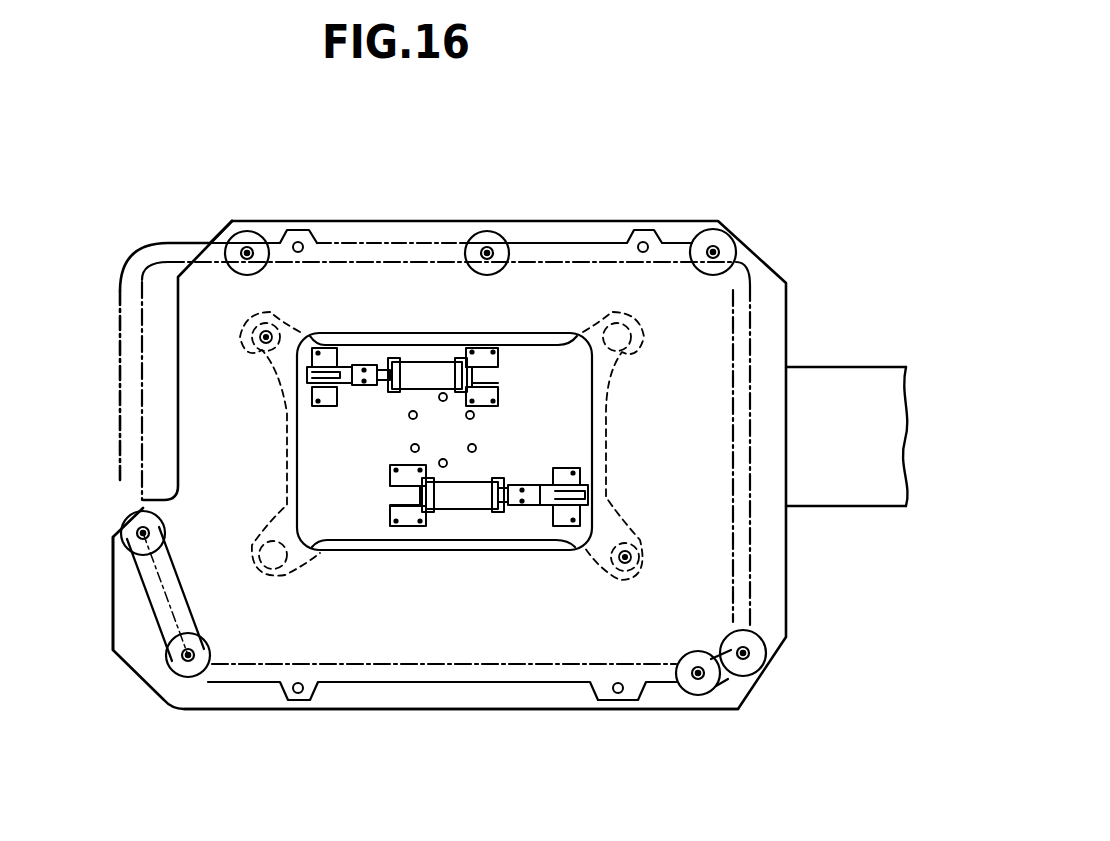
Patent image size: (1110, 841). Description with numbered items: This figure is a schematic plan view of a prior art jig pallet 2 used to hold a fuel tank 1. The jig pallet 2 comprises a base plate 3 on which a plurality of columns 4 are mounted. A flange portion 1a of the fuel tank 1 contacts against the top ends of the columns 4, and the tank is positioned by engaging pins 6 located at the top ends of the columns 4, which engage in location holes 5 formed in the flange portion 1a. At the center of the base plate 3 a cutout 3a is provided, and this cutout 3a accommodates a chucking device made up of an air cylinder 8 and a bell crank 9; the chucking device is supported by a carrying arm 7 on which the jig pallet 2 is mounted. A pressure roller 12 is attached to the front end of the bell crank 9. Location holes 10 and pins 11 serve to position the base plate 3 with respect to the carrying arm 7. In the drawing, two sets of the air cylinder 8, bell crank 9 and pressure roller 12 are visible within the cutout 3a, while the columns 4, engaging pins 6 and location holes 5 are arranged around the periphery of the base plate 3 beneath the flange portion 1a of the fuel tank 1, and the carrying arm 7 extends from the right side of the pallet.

The fuel tank 1 is at (147, 433).
The flange portion 1a is at (445, 682).
The jig pallet 2 is at (690, 202).
The base plate 3 is at (118, 664).
The cutout 3a is at (537, 393).
The columns 4 is at (247, 232).
The location holes 5 is at (177, 655).
The engaging pins 6 is at (190, 656).
The carrying arm 7 is at (830, 388).
The air cylinder 8 is at (428, 368).
The bell crank 9 is at (335, 347).
The location holes 10 is at (298, 362).
The pins 11 is at (258, 324).
The pressure roller 12 is at (310, 346).